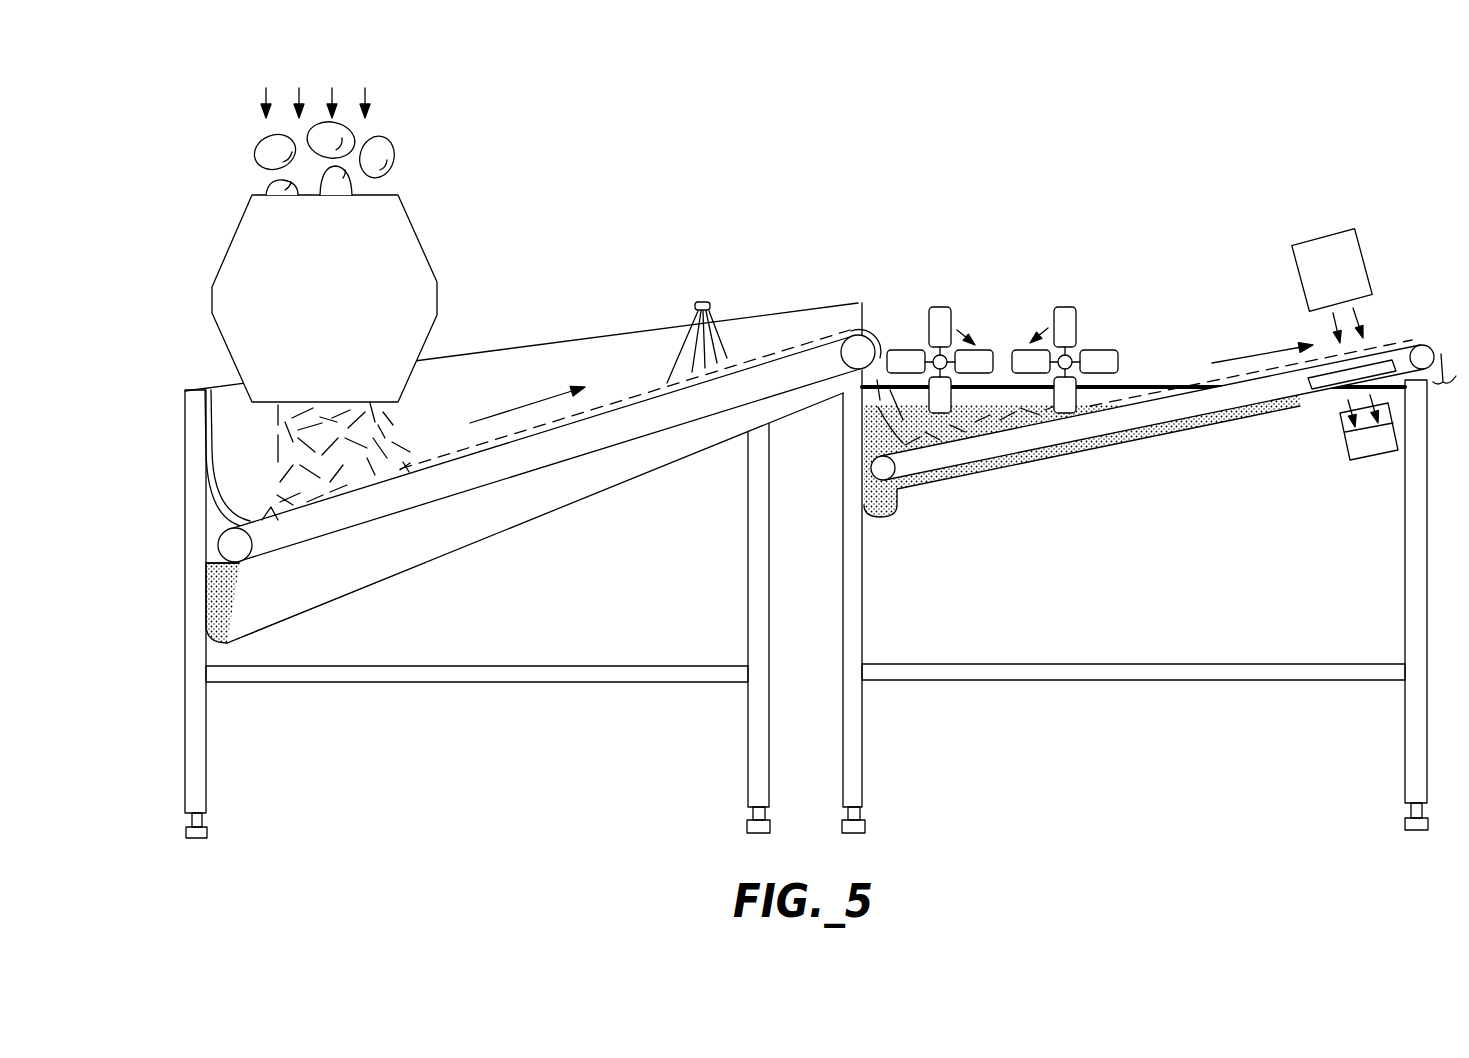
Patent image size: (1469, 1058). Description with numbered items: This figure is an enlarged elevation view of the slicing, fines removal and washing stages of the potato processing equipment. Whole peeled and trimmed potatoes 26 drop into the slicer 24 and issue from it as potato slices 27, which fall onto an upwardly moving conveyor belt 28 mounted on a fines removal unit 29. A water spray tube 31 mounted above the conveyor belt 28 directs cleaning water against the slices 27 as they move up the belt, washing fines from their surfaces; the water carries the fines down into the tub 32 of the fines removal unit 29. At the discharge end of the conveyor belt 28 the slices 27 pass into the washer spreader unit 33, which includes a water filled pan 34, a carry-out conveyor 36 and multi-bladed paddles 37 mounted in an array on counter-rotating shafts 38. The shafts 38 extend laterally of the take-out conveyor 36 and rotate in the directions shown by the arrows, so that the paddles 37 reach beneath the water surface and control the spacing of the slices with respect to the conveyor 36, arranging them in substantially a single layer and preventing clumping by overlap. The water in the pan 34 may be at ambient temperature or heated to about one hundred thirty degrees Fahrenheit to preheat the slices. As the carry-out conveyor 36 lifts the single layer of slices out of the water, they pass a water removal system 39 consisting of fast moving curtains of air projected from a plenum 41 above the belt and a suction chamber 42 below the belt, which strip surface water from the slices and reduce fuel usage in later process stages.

The potato slicer 24 is at (417, 233).
The potatoes 26 is at (390, 132).
The potato slices 27 is at (393, 432).
The conveyor belt 28 is at (577, 420).
The fines removal unit 29 is at (185, 483).
The water spray tube 31 is at (703, 298).
The tub 32 is at (455, 553).
The washer spreader unit 33 is at (1167, 368).
The water filled pan 34 is at (1127, 440).
The carry-out conveyor 36 is at (1413, 346).
The multi-bladed paddles 37 is at (1018, 333).
The counter-rotating shafts 38 is at (929, 345).
The water removal system 39 is at (1332, 221).
The plenum 41 is at (1360, 252).
The suction chamber 42 is at (1378, 358).